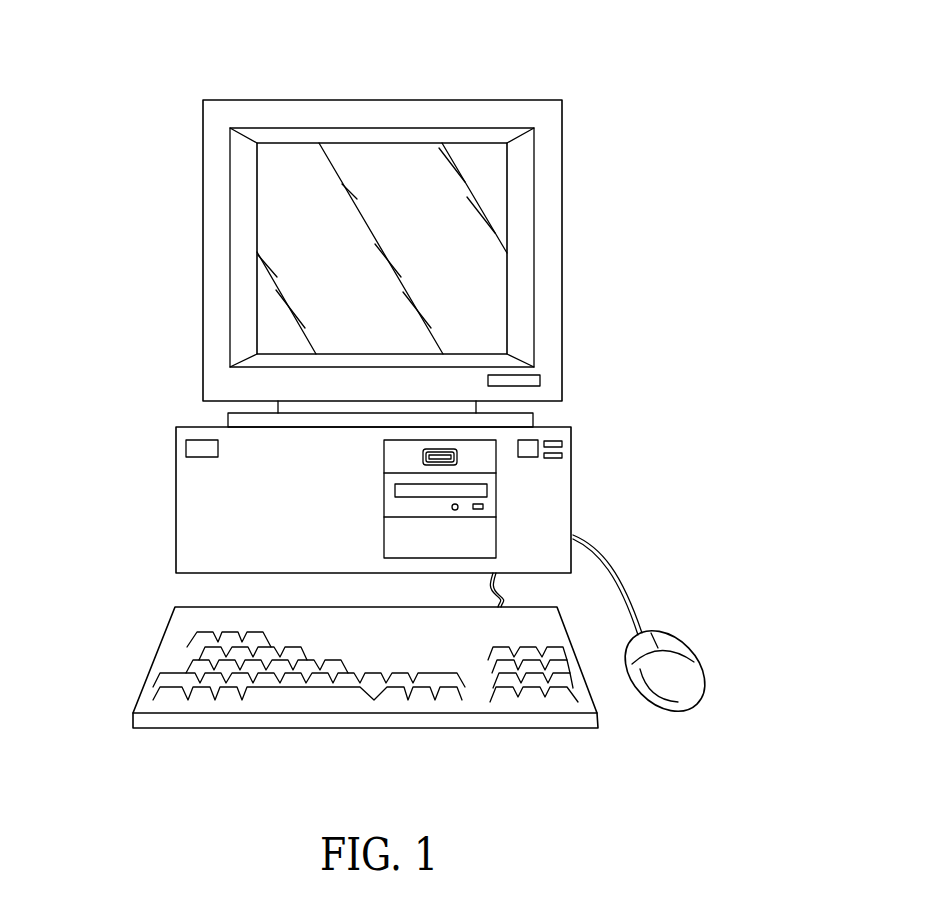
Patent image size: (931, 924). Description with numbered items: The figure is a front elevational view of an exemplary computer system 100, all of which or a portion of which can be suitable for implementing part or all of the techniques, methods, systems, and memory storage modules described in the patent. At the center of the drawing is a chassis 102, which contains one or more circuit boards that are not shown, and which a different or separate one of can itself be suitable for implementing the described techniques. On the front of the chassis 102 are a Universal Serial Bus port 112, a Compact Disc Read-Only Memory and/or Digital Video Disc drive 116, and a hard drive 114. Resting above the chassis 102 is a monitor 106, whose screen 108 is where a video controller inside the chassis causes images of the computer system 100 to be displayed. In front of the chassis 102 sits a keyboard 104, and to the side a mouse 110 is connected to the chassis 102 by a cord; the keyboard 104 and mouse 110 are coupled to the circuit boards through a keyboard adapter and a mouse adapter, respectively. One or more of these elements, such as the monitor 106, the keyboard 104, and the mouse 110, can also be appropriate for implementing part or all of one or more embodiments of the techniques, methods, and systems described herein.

The computer system 100 is at (565, 66).
The chassis 102 is at (176, 503).
The keyboard 104 is at (157, 653).
The monitor 106 is at (275, 99).
The screen 108 is at (302, 252).
The mouse 110 is at (683, 663).
The Universal Serial Bus (USB) port 112 is at (460, 452).
The hard drive 114 is at (487, 535).
The Compact Disc Read-Only Memory (CD-ROM) and/or Digital Video Disc (DVD) drive 116 is at (488, 495).